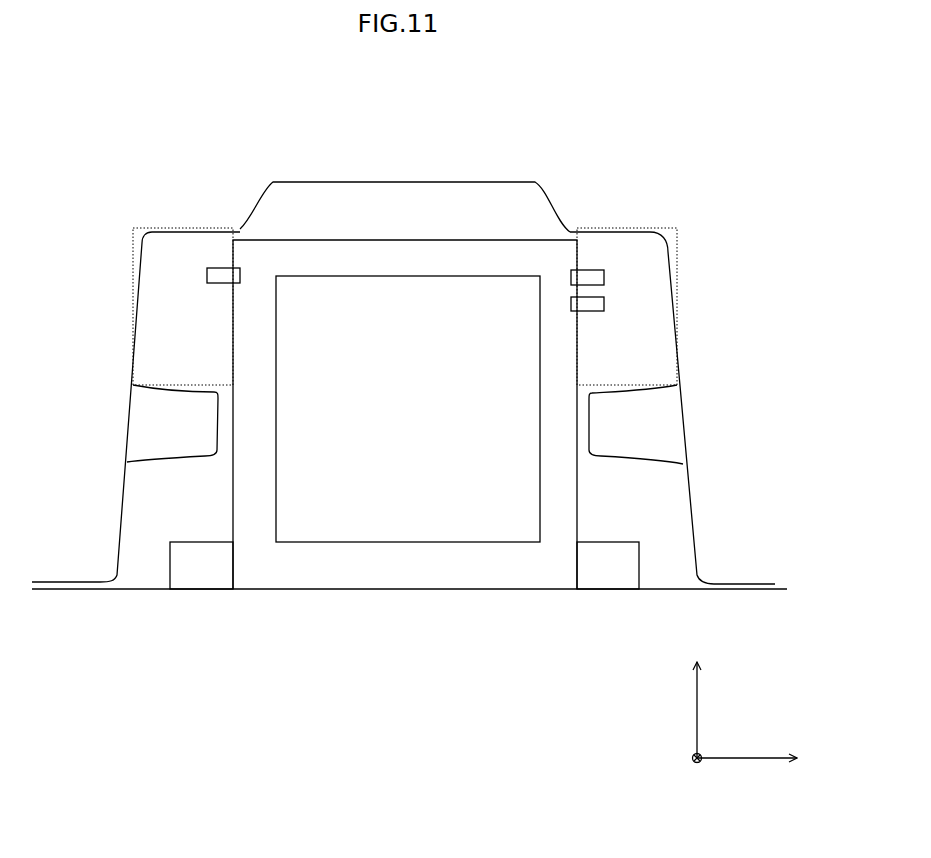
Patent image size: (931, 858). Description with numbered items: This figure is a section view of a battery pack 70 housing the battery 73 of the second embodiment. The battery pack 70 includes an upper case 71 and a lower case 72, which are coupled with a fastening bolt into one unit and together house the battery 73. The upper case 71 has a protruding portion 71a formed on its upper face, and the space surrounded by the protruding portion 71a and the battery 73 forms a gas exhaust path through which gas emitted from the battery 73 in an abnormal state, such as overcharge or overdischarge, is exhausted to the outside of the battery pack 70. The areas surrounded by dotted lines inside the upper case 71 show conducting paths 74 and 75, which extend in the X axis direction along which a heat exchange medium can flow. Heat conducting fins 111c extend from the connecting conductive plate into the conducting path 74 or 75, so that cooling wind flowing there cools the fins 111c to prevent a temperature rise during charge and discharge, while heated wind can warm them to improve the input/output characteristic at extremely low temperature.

The battery pack 70 is at (534, 163).
The upper case 71 is at (590, 232).
The protruding portion 71a is at (431, 182).
The lower case 72 is at (673, 591).
The battery 73 is at (610, 497).
The conducting path 74 is at (630, 262).
The conducting path 75 is at (174, 250).
The heat conducting fin 111c is at (207, 276).